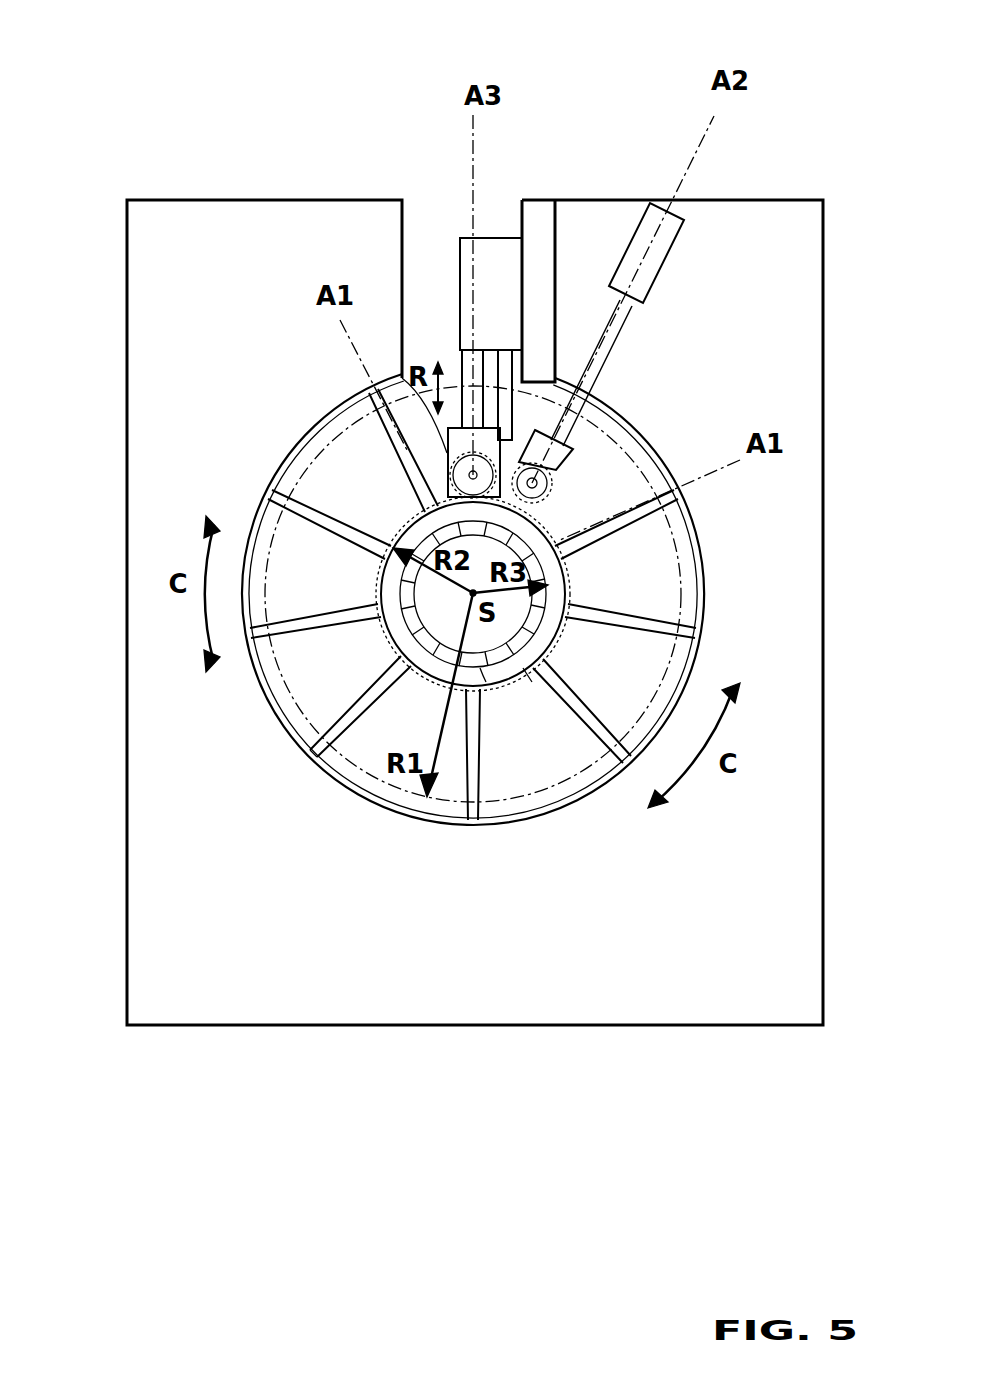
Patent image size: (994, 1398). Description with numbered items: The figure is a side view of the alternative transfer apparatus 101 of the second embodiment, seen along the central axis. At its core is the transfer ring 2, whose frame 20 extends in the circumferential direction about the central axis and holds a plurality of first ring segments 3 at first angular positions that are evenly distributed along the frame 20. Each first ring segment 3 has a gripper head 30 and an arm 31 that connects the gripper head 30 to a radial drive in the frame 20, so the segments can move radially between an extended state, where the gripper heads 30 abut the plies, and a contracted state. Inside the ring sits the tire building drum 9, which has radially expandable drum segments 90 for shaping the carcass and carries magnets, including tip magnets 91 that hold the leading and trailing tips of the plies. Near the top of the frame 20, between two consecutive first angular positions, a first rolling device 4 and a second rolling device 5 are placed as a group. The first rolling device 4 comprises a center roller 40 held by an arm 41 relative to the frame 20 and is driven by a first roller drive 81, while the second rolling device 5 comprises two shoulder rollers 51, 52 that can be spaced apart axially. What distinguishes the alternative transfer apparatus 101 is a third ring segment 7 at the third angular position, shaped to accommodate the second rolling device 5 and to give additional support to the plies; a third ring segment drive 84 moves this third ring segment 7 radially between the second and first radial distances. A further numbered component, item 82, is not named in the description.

The alternative transfer apparatus 101 is at (97, 98).
The transfer ring 2 is at (127, 858).
The frame 20 is at (175, 918).
The first ring segment 3 is at (387, 435).
The gripper head 30 is at (397, 662).
The arm 31 is at (332, 765).
The first rolling device 4 is at (523, 500).
The center roller 40 is at (557, 483).
The arm 41 is at (640, 317).
The second rolling device 5 is at (465, 363).
The third ring segment 7 is at (493, 447).
The tire building drum 9 is at (423, 593).
The shoulder roller 51 is at (395, 378).
The shoulder roller 52 is at (401, 450).
The first roller drive 81 is at (673, 238).
The slide block 82 is at (466, 238).
The third ring segment drive 84 is at (547, 243).
The drum segment 90 is at (528, 683).
The tip magnet 91 is at (483, 680).